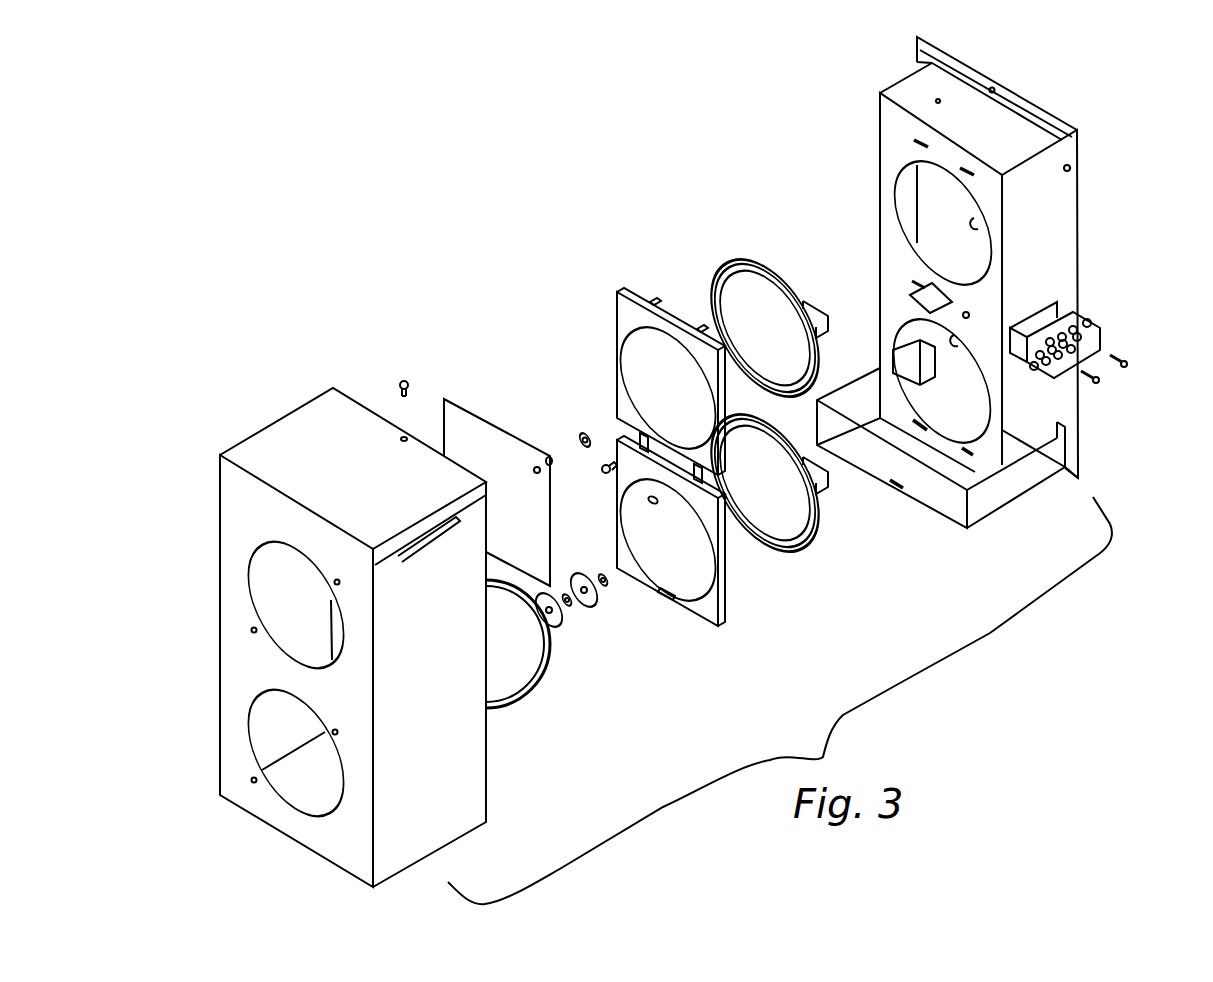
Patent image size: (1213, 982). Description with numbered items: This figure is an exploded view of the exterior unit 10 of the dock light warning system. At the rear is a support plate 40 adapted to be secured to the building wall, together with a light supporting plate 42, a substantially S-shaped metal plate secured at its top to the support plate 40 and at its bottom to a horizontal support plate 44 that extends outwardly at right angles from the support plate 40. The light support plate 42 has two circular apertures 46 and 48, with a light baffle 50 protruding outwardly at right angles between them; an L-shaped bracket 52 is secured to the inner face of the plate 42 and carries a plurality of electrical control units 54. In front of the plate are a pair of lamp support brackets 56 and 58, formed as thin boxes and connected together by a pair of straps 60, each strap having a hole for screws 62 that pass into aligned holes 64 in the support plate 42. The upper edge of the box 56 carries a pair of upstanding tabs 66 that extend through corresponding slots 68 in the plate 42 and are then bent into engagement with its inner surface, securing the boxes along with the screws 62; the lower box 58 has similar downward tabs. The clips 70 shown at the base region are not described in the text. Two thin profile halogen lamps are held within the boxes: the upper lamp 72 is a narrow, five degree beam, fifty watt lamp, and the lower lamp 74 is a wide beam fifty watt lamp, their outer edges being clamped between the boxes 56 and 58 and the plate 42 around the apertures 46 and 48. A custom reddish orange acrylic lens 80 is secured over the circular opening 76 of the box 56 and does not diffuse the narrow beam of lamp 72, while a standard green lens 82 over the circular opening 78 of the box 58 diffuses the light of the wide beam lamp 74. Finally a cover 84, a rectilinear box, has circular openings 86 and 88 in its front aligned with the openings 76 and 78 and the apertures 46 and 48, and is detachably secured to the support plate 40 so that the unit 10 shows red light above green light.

The exterior unit 10 is at (863, 572).
The support plate 40 is at (1072, 214).
The light supporting plate 42 is at (885, 148).
The horizontal support plate 44 is at (956, 515).
The circular aperture 46 is at (987, 228).
The circular aperture 48 is at (970, 338).
The light baffle 50 is at (908, 298).
The L-shaped bracket 52 is at (1060, 310).
The electrical control units 54 is at (1103, 333).
The lamp support bracket 56 is at (617, 362).
The lamp support bracket 58 is at (623, 499).
The straps 60 is at (622, 428).
The screws 62 is at (622, 488).
The holes 64 is at (965, 312).
The upstanding tabs 66 is at (701, 326).
The slots 68 is at (966, 168).
The clips 70 is at (965, 457).
The upper lamp 72 is at (752, 280).
The lower lamp 74 is at (795, 548).
The circular opening 76 is at (630, 395).
The circular opening 78 is at (634, 549).
The custom colored acrylic lens 80 is at (486, 421).
The green lens 82 is at (530, 684).
The cover 84 is at (222, 536).
The circular opening 86 is at (256, 599).
The circular opening 88 is at (253, 748).